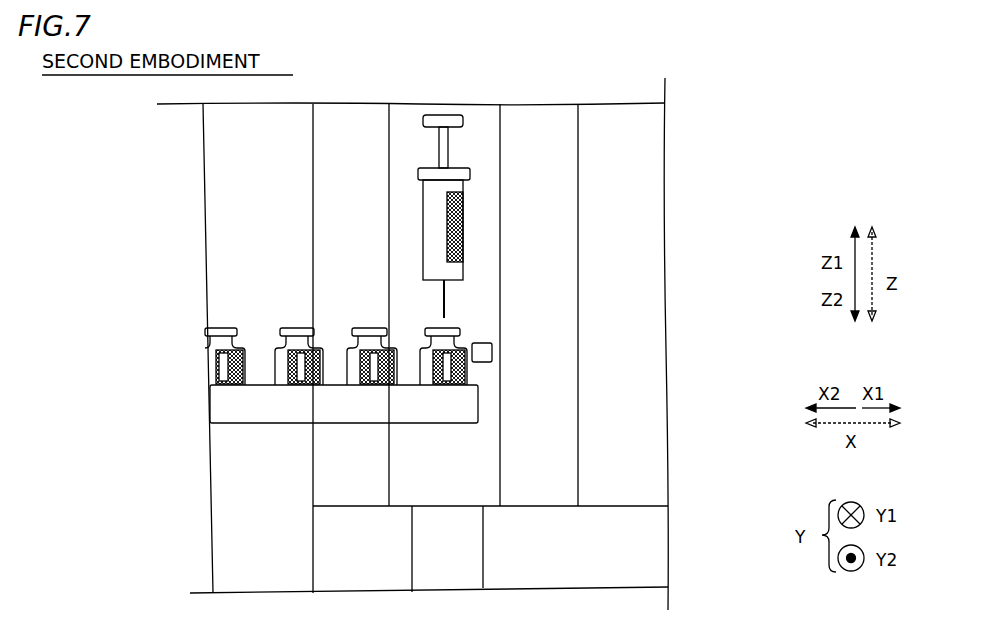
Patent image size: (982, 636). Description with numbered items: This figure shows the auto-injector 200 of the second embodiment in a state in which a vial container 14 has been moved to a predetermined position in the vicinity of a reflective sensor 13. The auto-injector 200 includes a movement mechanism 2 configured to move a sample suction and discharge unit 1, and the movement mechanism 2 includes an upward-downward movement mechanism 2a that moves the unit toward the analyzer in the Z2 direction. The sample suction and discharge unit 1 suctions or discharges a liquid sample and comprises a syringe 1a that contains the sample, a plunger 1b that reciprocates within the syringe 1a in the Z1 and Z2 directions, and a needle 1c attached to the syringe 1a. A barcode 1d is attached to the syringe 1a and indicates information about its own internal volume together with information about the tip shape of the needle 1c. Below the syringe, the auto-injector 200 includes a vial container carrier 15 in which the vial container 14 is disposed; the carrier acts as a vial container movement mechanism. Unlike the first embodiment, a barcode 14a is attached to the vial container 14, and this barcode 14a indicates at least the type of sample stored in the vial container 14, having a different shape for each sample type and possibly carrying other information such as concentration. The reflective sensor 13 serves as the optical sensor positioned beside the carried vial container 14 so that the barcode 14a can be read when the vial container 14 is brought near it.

The sample suction and discharge unit 1 is at (434, 216).
The syringe 1a is at (423, 220).
The plunger 1b is at (439, 152).
The needle 1c is at (362, 299).
The barcode 1d is at (463, 232).
The movement mechanism 2 is at (568, 60).
The upward-downward movement mechanism 2a is at (500, 125).
The reflective sensor 13 is at (492, 348).
The vial container 14 is at (220, 328).
The barcode 14a is at (222, 360).
The vial container carrier 15 is at (288, 428).
The auto-injector 200 is at (576, 160).